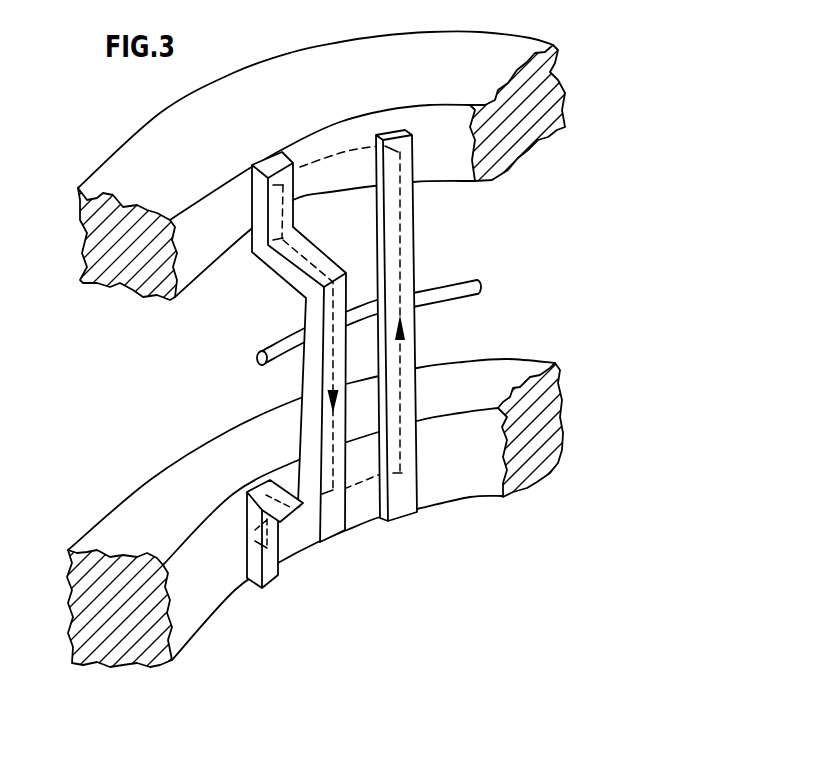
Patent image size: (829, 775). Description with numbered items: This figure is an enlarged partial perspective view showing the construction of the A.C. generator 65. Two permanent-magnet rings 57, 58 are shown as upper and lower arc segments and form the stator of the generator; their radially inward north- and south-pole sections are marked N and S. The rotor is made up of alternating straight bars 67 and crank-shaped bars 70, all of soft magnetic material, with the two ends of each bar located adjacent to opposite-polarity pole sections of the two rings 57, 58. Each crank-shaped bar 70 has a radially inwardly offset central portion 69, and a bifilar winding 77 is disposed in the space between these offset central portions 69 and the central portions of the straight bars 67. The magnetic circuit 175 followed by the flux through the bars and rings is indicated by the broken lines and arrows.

The permanent-magnet ring 57 is at (157, 118).
The permanent-magnet ring 58 is at (128, 492).
The A.C. generator 65 is at (82, 358).
The straight bar 67 is at (413, 224).
The radially inwardly offset central portion 69 is at (304, 379).
The crank-shaped bar 70 is at (278, 575).
The bifilar winding 77 is at (481, 273).
The magnetic circuit 175 is at (405, 357).